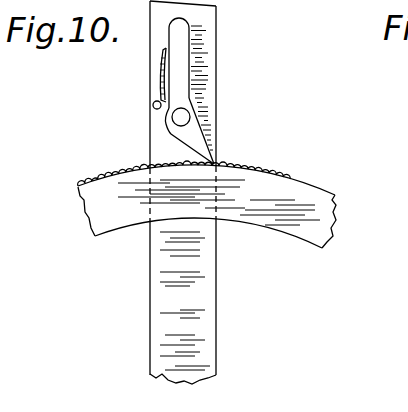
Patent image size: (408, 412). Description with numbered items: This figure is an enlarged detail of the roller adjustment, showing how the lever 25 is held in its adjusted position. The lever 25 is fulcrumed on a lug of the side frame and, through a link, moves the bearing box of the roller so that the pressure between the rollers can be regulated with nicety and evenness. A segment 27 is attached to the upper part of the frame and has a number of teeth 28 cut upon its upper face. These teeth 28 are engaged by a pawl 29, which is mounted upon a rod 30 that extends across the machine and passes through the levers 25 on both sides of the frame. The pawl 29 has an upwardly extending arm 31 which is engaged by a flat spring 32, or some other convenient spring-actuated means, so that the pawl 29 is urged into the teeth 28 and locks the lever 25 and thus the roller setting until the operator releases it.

The lever 25 is at (162, 280).
The segment 27 is at (308, 220).
The teeth 28 is at (275, 172).
The pawl 29 is at (198, 141).
The rod 30 is at (183, 117).
The upwardly extending arm 31 is at (186, 42).
The flat spring 32 is at (160, 78).